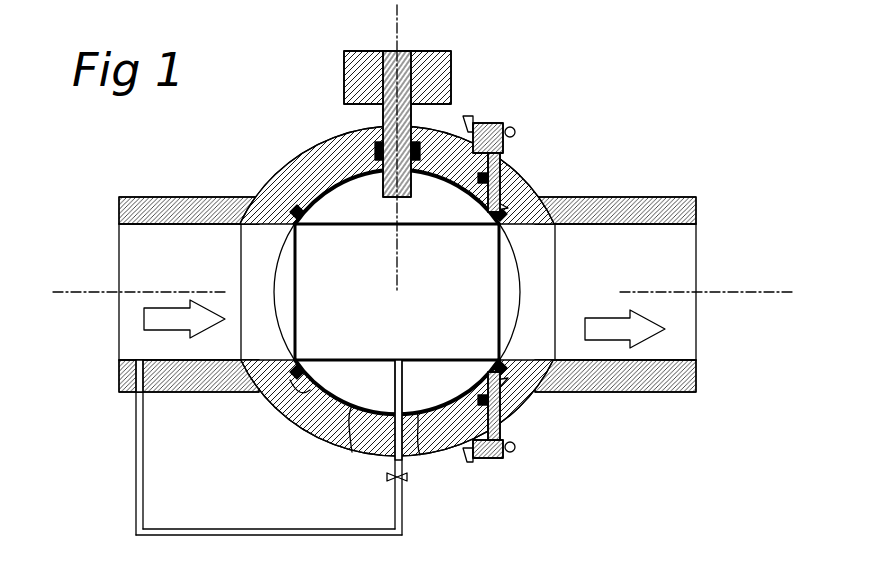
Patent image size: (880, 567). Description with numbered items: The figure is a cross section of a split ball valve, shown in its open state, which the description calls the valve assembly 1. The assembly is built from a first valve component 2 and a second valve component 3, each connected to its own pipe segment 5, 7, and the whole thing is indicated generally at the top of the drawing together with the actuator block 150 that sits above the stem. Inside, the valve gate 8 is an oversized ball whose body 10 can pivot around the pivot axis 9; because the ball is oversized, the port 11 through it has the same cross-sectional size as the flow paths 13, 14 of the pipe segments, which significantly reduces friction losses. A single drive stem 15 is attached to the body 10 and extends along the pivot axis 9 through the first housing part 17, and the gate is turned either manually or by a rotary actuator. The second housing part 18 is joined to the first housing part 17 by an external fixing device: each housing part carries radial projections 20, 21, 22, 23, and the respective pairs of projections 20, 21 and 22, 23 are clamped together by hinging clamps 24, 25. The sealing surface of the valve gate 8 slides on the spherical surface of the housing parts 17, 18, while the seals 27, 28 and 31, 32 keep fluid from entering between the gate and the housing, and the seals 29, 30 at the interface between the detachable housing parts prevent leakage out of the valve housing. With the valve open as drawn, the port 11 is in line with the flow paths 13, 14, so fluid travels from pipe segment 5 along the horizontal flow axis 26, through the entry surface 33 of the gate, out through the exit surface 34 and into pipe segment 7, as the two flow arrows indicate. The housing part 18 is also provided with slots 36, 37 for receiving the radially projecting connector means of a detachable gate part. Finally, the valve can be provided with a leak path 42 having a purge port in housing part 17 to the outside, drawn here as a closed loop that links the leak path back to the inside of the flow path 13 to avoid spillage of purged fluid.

The valve assembly 1 is at (522, 173).
The first valve component 2 is at (265, 170).
The second valve component 3 is at (686, 130).
The pipe segment 5 is at (123, 390).
The pipe segment 7 is at (682, 386).
The valve gate 8 is at (418, 456).
The pivot axis 9 is at (398, 32).
The body 10 is at (360, 226).
The port 11 is at (297, 376).
The flow path 13 is at (138, 345).
The flow path 14 is at (673, 345).
The drive stem 15 is at (383, 108).
The first housing part 17 is at (352, 455).
The second housing part 18 is at (514, 410).
The radial projection 20 is at (488, 140).
The radial projection 21 is at (508, 127).
The radial projection 22 is at (473, 460).
The radial projection 23 is at (503, 462).
The hinging clamp 24 is at (506, 122).
The hinging clamp 25 is at (515, 455).
The flow axis 26 is at (750, 288).
The seal 27 is at (266, 180).
The seal 28 is at (303, 395).
The seal 29 is at (444, 442).
The seal 30 is at (503, 140).
The seal 31 is at (540, 195).
The seal 32 is at (532, 402).
The entry surface 33 is at (296, 298).
The exit surface 34 is at (498, 298).
The slot 36 is at (525, 180).
The slot 37 is at (507, 402).
The leak path 42 is at (350, 450).
The actuator head 150 is at (451, 68).